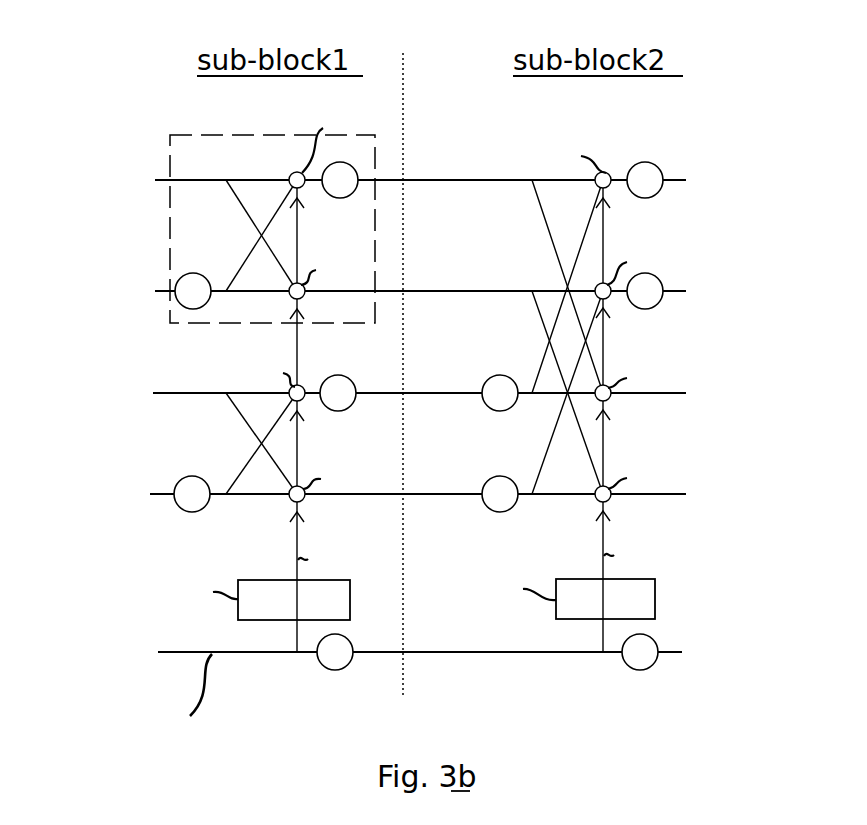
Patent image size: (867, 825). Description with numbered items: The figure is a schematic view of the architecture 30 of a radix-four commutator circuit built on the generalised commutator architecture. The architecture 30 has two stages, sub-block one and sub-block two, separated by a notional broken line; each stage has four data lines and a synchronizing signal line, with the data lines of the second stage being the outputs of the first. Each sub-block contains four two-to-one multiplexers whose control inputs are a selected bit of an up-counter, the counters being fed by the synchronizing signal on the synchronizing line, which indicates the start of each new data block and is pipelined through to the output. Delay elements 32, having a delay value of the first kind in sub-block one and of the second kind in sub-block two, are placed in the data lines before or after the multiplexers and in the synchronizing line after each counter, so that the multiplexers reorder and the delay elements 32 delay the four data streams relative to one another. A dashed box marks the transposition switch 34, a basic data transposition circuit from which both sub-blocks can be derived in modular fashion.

The architecture 30 is at (762, 125).
The delay element 32 is at (176, 506).
The transposition switch 34 is at (182, 134).